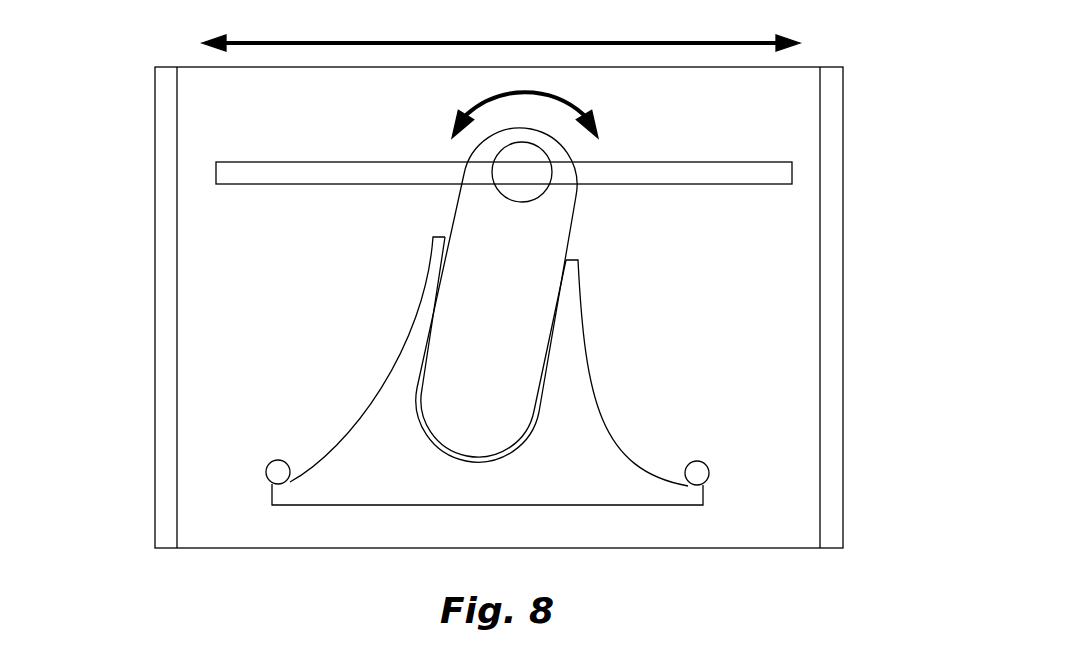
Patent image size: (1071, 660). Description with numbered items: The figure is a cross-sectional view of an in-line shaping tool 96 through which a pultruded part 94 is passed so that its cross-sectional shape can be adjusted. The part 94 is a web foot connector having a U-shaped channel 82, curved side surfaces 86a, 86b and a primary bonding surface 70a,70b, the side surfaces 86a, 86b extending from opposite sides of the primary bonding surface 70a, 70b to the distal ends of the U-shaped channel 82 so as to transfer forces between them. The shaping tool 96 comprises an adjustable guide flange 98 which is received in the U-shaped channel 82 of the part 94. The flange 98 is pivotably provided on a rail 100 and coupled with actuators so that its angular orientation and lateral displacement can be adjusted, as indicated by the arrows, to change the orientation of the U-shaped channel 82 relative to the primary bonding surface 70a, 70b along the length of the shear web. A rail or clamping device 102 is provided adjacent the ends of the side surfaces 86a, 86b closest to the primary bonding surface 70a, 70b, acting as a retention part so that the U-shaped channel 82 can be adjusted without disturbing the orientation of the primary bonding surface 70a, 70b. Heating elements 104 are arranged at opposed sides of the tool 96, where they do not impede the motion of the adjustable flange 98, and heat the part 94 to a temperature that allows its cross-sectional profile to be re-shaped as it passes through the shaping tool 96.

The in-line shaping tool 96 is at (100, 48).
The rail 100 is at (216, 170).
The heating elements 104 is at (152, 237).
The adjustable guide flange 98 is at (530, 283).
The U-shaped channel 82 is at (543, 383).
The side surface 86a is at (360, 413).
The side surface 86b is at (612, 438).
The pultruded part 94 is at (367, 450).
The rail or clamping device 102 is at (265, 470).
The primary bonding surfaces 70a,70b is at (449, 559).
The primary bonding surface 70a is at (449, 559).
The primary bonding surface 70b is at (340, 505).